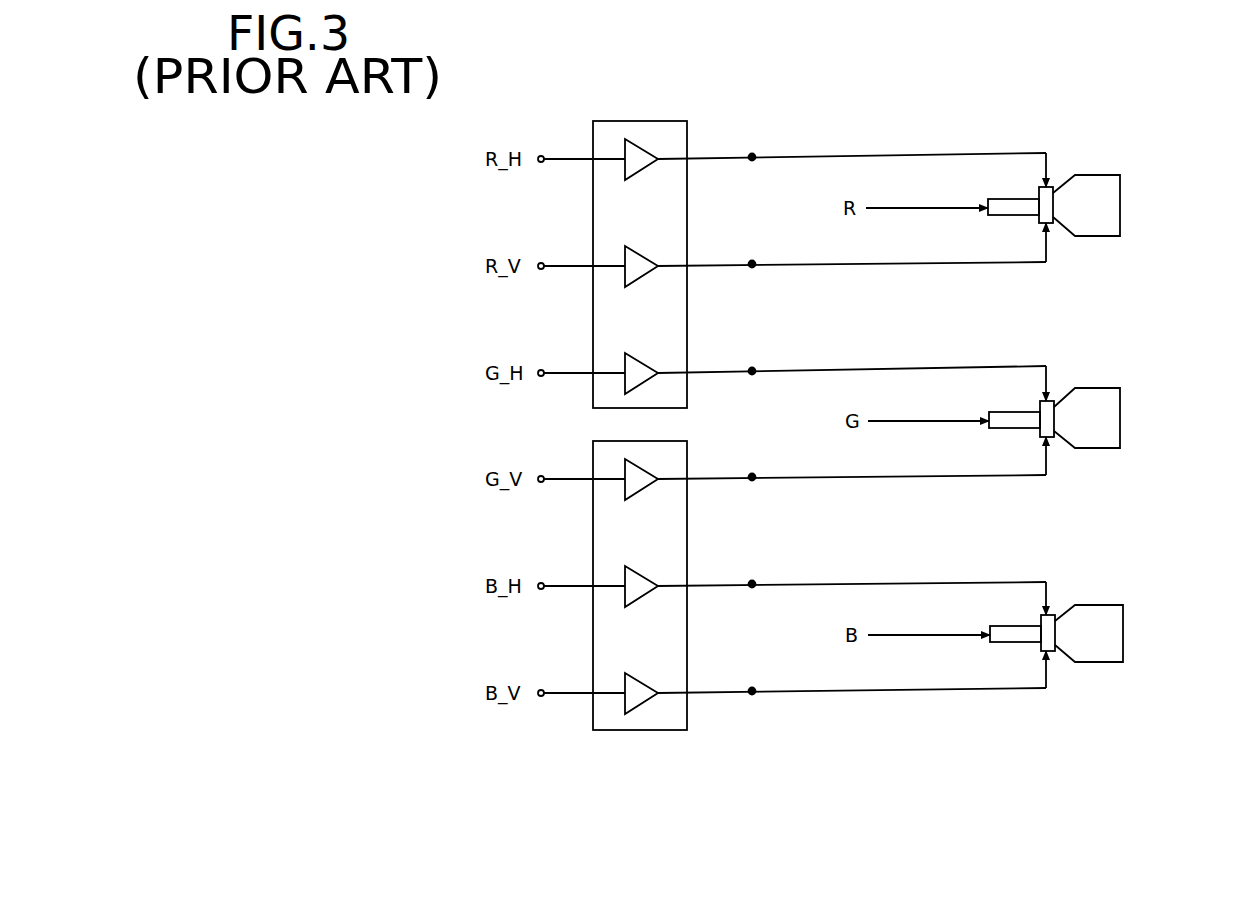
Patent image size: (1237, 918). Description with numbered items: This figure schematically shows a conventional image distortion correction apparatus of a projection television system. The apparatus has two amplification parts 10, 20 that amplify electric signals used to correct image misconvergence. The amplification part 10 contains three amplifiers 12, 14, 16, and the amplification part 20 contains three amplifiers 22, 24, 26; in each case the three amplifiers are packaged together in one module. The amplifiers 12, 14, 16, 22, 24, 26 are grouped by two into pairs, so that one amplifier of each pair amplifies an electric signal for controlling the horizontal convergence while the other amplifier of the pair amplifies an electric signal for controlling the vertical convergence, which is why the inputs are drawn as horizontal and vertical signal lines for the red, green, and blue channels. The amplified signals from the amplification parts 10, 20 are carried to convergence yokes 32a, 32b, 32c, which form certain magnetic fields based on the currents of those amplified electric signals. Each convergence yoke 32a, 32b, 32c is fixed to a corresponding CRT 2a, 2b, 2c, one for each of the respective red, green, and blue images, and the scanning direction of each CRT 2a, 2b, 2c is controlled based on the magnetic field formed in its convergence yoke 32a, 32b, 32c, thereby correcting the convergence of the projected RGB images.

The amplification part 10 is at (662, 121).
The amplifier 12 is at (625, 140).
The amplifier 14 is at (625, 247).
The amplifier 16 is at (625, 354).
The amplification part 20 is at (640, 730).
The amplifier 22 is at (625, 459).
The amplifier 24 is at (625, 566).
The amplifier 26 is at (625, 673).
The CRT 2a is at (1120, 204).
The CRT 2b is at (1120, 416).
The CRT 2c is at (1123, 630).
The convergence yoke 32a is at (1053, 225).
The convergence yoke 32b is at (1054, 439).
The convergence yoke 32c is at (1055, 653).